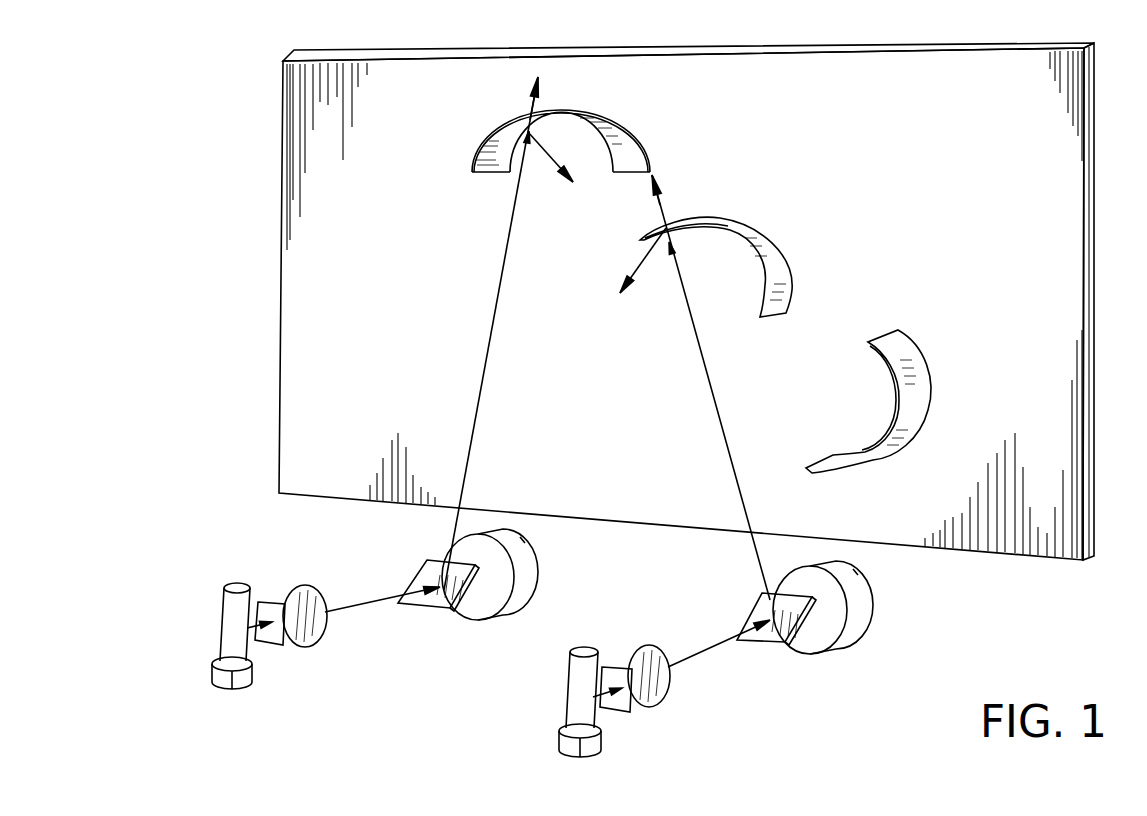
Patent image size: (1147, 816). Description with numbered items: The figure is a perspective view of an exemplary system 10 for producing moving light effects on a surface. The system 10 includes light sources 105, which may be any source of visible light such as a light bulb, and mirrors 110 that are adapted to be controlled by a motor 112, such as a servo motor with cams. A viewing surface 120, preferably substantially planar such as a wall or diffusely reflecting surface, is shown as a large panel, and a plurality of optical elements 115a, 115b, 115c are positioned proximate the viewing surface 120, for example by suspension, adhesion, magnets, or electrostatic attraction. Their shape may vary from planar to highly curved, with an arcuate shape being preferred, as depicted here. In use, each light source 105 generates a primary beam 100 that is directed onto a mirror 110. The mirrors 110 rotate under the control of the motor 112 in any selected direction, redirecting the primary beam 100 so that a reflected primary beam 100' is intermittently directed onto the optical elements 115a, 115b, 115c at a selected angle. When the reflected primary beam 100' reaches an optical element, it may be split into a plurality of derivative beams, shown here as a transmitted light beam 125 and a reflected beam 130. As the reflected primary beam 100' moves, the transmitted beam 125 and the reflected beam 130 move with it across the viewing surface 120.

The system 10 is at (194, 240).
The primary beam 100 is at (512, 626).
The reflected primary beam 100' is at (607, 338).
The light source 105 is at (228, 620).
The mirror 110 is at (418, 605).
The motor 112 is at (487, 598).
The optical element 115a is at (473, 168).
The optical element 115b is at (750, 222).
The optical element 115c is at (932, 390).
The viewing surface 120 is at (393, 261).
The transmitted light beam 125 is at (541, 103).
The reflected beam 130 is at (549, 157).